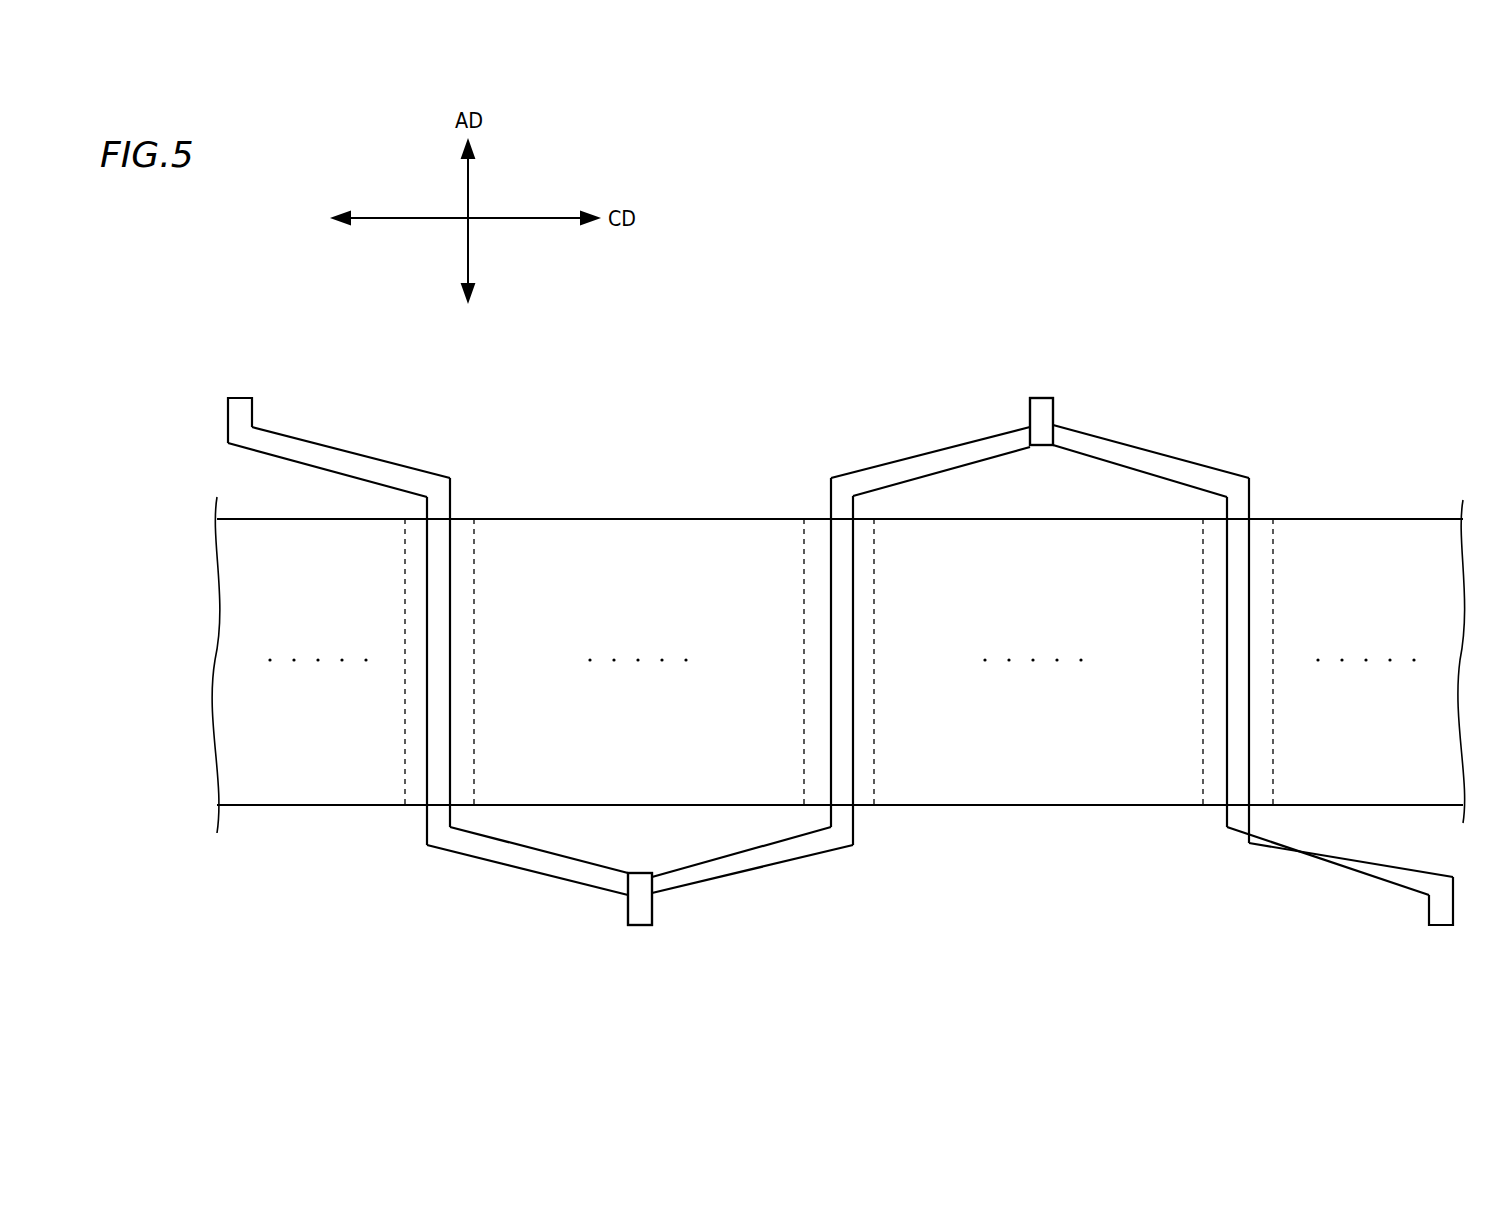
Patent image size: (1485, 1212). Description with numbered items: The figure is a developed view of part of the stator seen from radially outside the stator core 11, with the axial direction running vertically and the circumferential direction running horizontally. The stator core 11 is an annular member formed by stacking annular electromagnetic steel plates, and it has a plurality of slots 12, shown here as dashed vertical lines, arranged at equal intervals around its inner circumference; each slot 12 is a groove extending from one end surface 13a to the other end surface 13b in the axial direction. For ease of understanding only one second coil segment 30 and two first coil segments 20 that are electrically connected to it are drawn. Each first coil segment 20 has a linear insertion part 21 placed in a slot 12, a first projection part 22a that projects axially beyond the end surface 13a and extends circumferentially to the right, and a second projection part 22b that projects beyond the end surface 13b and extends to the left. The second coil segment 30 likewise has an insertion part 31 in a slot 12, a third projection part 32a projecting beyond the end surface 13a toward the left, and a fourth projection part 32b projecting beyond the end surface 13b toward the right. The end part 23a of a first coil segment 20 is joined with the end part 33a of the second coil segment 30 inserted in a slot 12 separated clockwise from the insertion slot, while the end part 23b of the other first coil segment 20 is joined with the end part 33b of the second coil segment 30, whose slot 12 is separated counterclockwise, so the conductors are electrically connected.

The stator core 11 is at (838, 655).
The slot 12 is at (475, 558).
The one end surface 13a is at (1030, 805).
The other end surface 13b is at (660, 519).
The first coil segment 20 is at (840, 662).
The insertion part 21 is at (428, 752).
The first projection part 22a is at (527, 872).
The second projection part 22b is at (312, 447).
The end part 23a is at (640, 925).
The end part 23b is at (240, 398).
The second coil segment 30 is at (840, 642).
The insertion part 31 is at (848, 762).
The third projection part 32a is at (797, 865).
The fourth projection part 32b is at (945, 447).
The end part 33a is at (645, 910).
The end part 33b is at (1020, 408).